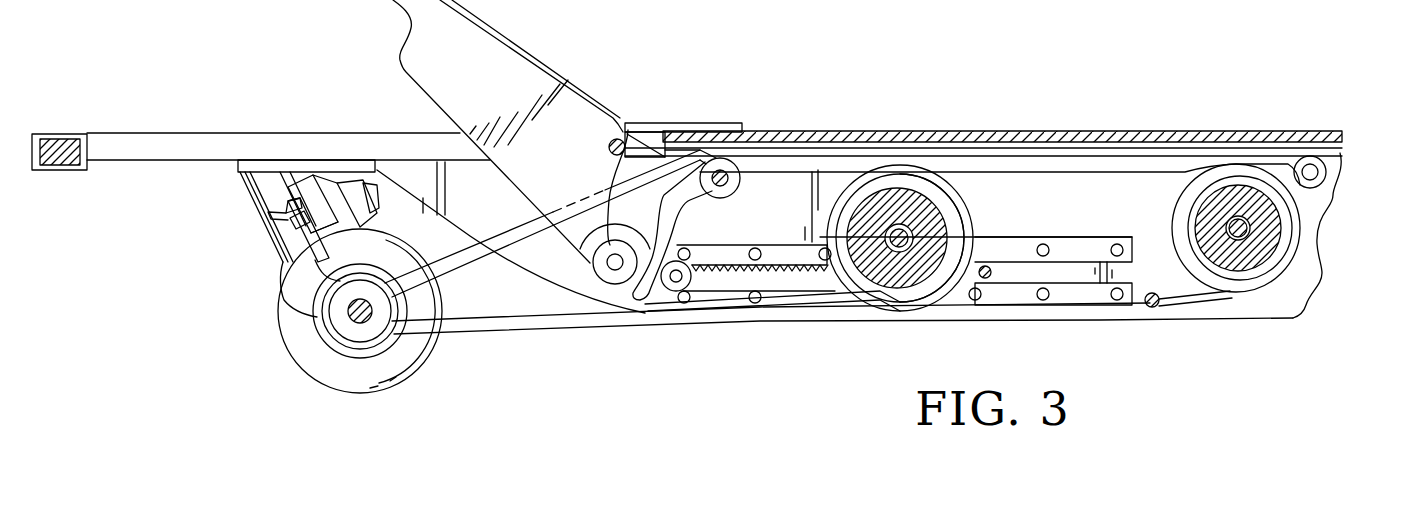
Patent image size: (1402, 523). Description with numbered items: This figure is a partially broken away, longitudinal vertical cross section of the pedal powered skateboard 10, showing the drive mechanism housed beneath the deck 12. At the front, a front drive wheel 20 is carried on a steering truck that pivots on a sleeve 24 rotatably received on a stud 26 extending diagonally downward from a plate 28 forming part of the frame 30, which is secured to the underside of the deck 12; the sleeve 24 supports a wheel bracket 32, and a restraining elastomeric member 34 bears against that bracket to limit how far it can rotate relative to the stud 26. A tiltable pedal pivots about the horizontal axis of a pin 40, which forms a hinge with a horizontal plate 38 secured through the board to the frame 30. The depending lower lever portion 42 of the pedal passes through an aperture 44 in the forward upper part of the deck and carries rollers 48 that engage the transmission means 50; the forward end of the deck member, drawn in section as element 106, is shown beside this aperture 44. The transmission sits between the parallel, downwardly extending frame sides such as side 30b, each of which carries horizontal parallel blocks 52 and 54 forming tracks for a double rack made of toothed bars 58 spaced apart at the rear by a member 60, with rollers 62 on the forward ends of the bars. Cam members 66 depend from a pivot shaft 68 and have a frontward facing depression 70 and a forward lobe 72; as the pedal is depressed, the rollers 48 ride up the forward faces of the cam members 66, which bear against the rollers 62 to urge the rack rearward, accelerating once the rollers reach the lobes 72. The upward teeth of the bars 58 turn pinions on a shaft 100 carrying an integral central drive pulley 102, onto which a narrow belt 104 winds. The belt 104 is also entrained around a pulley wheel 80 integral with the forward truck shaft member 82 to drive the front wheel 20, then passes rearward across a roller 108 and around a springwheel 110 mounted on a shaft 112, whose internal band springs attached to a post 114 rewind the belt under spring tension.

The pedal powered skateboard 10 is at (898, 106).
The deck 12 is at (1118, 135).
The front drive wheels 20 is at (302, 369).
The sleeve 24 is at (262, 222).
The stud 26 is at (282, 294).
The plate 28 is at (262, 163).
The frame 30 is at (535, 286).
The frame side 30b is at (1090, 220).
The wheel bracket 32 is at (283, 263).
The restraining elastomeric member 34 is at (318, 192).
The horizontal plate 38 is at (706, 121).
The pin 40 is at (608, 146).
The lower lever portion 42 is at (525, 178).
The aperture 44 is at (116, 150).
The rollers 48 is at (586, 293).
The transmission means 50 is at (855, 345).
The blocks 52 is at (1007, 248).
The blocks 54 is at (1085, 297).
The toothed bars 58 is at (783, 280).
The member 60 is at (992, 278).
The rollers 62 is at (646, 292).
The cam members 66 is at (692, 222).
The pivot shaft 68 is at (731, 190).
The depression 70 is at (572, 226).
The forward lobe 72 is at (665, 186).
The drive pulley 80 is at (361, 338).
The shaft member 82 is at (420, 296).
The shaft 100 is at (902, 250).
The drive pulley 102 is at (958, 215).
The belt 104 is at (722, 308).
The bar end cap 106 is at (52, 172).
The roller 108 is at (738, 166).
The springwheel 110 is at (1174, 223).
The shaft 112 is at (1262, 222).
The post 114 is at (1152, 310).